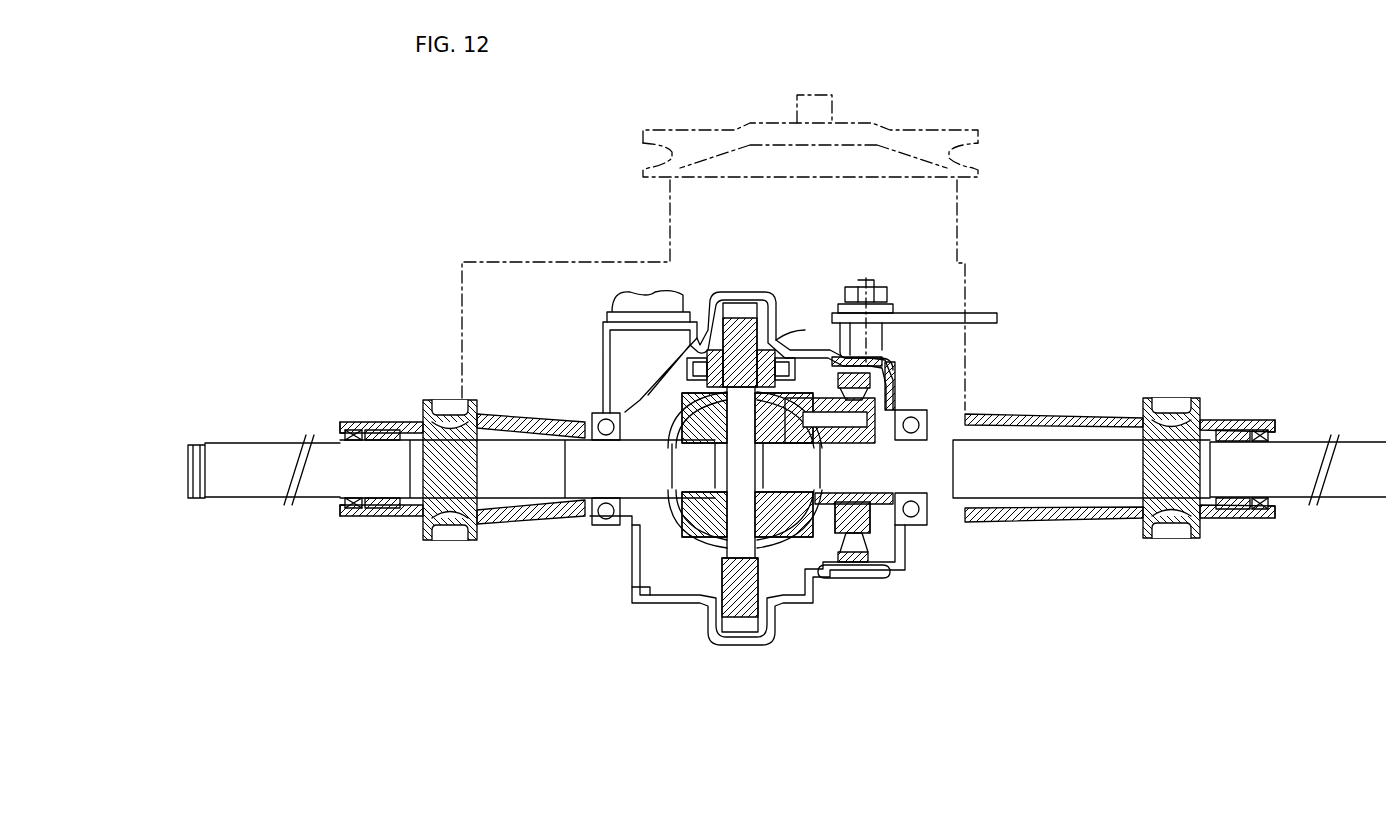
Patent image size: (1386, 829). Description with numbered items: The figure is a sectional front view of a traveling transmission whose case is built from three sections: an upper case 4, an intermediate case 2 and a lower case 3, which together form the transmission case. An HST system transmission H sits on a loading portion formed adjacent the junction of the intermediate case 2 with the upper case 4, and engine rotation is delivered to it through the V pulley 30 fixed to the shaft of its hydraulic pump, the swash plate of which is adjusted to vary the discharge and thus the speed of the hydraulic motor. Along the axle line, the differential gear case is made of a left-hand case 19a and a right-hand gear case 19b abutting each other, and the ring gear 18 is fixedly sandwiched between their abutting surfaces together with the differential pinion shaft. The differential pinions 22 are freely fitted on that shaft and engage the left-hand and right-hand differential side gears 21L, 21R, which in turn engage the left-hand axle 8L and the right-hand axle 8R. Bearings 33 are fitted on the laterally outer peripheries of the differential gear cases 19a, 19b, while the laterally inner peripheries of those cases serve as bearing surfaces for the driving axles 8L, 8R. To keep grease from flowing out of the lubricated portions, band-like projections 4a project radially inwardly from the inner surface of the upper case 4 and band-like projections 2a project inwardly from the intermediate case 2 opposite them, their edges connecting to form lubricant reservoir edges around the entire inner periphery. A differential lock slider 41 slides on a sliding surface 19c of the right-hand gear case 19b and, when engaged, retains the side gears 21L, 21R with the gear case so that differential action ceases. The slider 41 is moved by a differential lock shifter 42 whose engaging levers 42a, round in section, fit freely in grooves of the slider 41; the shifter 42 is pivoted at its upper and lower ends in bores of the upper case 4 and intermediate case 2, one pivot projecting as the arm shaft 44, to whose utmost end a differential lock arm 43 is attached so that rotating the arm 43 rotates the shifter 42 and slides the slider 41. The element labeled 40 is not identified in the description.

The V pulley 30 is at (722, 132).
The HST system transmission H is at (670, 232).
The ring gear 18 is at (743, 320).
The left-hand case 19a is at (708, 328).
The right-hand gear case 19b is at (786, 346).
The sliding surface 19c is at (897, 368).
The arm shaft 44 is at (866, 284).
The differential lock arm 43 is at (985, 314).
The differential lock shifter 42 is at (882, 398).
The engaging lever 42a is at (858, 546).
The differential lock slider 41 is at (872, 514).
The bevel pinion gear 40 is at (818, 416).
The differential pinion 22 is at (680, 398).
The right-hand differential side gear 21R is at (674, 516).
The left-hand differential side gear 21L is at (800, 538).
The bearing 33 is at (598, 426).
The upper case 4 is at (1046, 412).
The band-like projection 4a is at (454, 433).
The intermediate case 2 is at (1074, 520).
The band-like projection 2a is at (447, 504).
The right-hand axle 8R is at (262, 442).
The left-hand axle 8L is at (1352, 442).
The lower case 3 is at (766, 640).